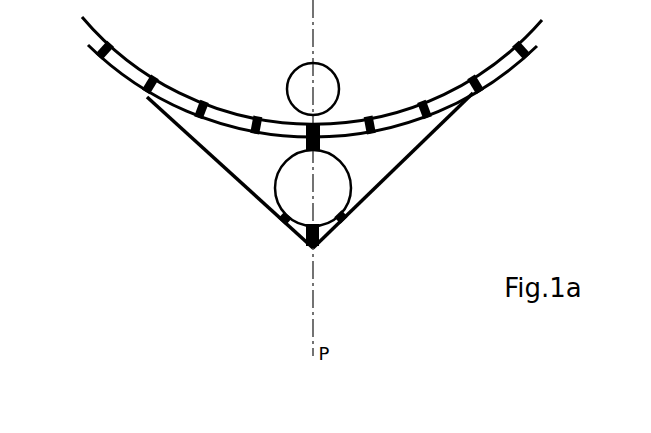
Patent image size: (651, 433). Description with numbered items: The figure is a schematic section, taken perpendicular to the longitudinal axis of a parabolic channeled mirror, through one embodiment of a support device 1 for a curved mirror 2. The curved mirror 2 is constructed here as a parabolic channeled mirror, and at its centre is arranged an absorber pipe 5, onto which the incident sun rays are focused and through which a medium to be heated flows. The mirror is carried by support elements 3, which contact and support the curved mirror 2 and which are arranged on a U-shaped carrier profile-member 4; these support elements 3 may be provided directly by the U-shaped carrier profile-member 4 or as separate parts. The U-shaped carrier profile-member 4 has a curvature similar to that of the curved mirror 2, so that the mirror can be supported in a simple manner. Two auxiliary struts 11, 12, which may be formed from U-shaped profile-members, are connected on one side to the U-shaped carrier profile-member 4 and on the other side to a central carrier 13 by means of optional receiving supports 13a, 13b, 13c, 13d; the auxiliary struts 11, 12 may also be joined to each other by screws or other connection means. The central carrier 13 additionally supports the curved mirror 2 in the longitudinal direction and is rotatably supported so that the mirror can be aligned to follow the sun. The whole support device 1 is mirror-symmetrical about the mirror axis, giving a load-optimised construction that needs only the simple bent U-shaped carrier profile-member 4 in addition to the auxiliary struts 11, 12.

The support device 1 is at (92, 162).
The curved mirror 2 is at (541, 27).
The support elements 3 is at (154, 80).
The U-shaped carrier profile-member 4 is at (448, 113).
The absorber pipe 5 is at (323, 66).
The auxiliary strut 11 is at (187, 134).
The auxiliary strut 12 is at (423, 151).
The central carrier 13 is at (351, 184).
The receiving support 13a is at (301, 151).
The receiving support 13b is at (350, 219).
The receiving support 13c is at (277, 213).
The receiving support 13d is at (316, 250).